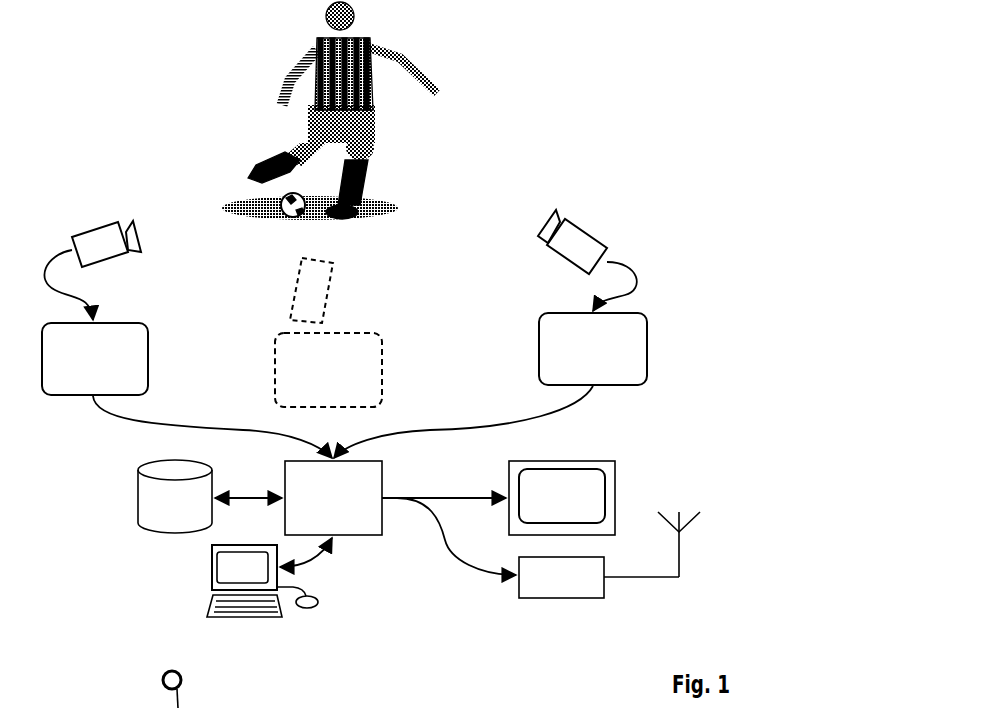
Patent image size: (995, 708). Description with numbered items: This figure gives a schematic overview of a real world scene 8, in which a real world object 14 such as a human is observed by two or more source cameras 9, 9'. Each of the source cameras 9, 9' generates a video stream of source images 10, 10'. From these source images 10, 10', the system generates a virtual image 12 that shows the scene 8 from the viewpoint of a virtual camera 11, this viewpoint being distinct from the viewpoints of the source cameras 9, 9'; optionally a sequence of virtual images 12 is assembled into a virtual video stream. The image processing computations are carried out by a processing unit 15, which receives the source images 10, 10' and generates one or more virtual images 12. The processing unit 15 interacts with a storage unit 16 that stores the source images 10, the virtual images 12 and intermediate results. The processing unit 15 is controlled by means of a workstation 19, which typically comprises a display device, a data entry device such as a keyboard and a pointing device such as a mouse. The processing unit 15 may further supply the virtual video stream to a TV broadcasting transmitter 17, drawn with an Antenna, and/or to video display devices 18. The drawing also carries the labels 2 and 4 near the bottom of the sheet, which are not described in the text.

The real world scene 8 is at (157, 73).
The real world object 14 is at (382, 115).
The source camera 9 is at (92, 257).
The source camera 9' is at (591, 258).
The source images 10 is at (187, 390).
The source images 10' is at (527, 385).
The virtual camera 11 is at (328, 293).
The virtual image 12 is at (383, 357).
The processing unit 15 is at (375, 528).
The storage unit 16 is at (137, 507).
The TV broadcasting transmitter 17 is at (567, 603).
The video display devices 18 is at (615, 463).
The workstation 19 is at (218, 572).
The ball 2 is at (160, 682).
The playing field 4 is at (40, 707).
The antenna Antenna is at (682, 553).